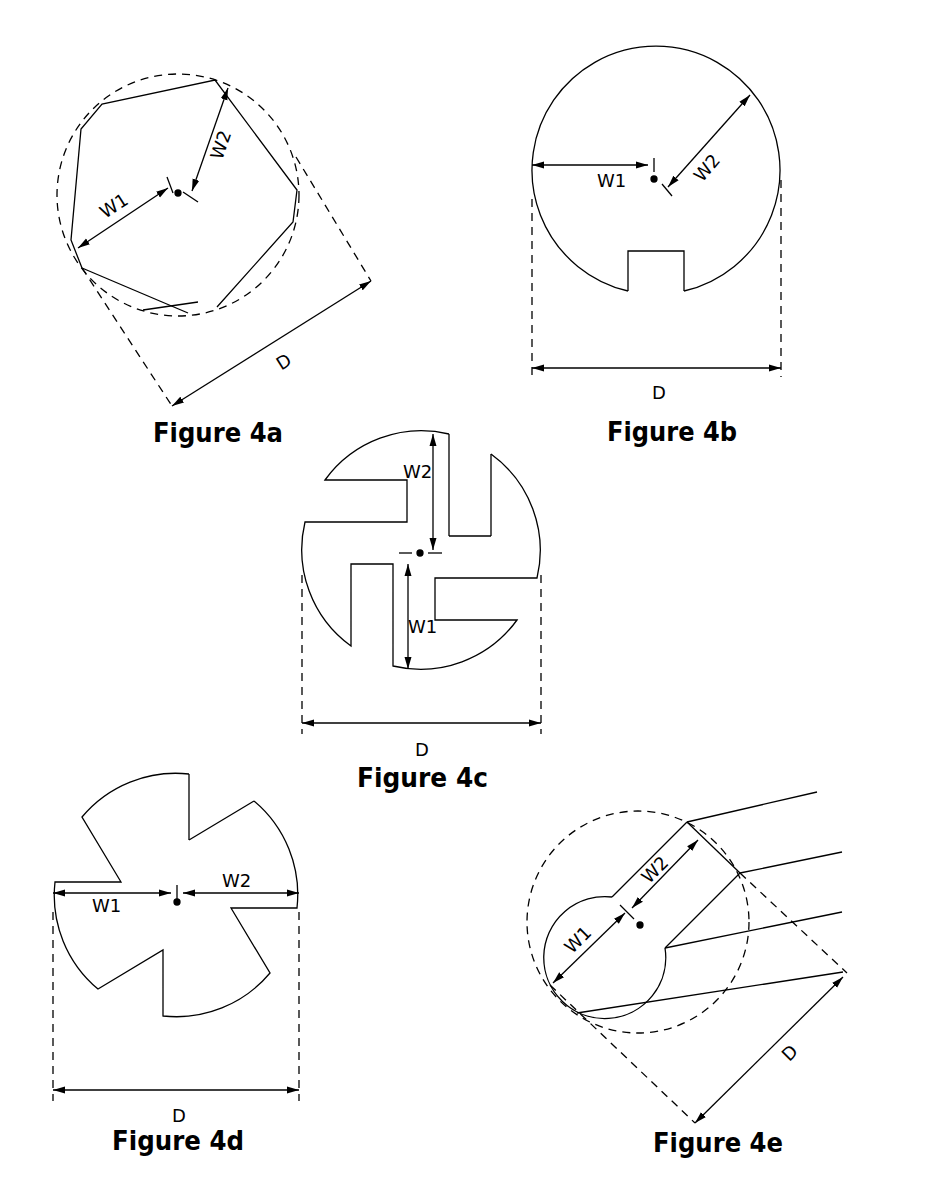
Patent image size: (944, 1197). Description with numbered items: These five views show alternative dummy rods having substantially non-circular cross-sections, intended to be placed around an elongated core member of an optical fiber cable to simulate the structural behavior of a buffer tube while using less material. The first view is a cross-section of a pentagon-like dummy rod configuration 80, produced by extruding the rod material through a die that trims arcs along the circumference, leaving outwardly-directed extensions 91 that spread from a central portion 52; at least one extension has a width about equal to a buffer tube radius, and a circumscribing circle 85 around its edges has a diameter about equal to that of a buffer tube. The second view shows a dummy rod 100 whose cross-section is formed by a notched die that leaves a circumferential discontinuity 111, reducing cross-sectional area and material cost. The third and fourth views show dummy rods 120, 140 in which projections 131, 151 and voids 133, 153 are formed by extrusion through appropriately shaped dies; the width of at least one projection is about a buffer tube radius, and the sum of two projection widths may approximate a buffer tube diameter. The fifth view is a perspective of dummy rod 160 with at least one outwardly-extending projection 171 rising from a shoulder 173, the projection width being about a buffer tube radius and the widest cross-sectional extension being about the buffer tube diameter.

In FIG. 4A, the pentagon-like dummy rod configuration 80 is at (174, 192).
In FIG. 4A, the circumscribed circle 85 is at (143, 75).
In FIG. 4A, the outwardly-directed extensions 91 is at (143, 310).
In FIG. 4A, the central portion 52 is at (178, 196).
In FIG. 4B, the central portion 52 is at (654, 182).
In FIG. 4C, the central portion 52 is at (423, 555).
In FIG. 4D, the central portion 52 is at (177, 905).
In FIG. 4E, the central portion 52 is at (640, 928).
In FIG. 4B, the circular cross-section shaft with keyway 100 is at (689, 157).
In FIG. 4B, the keyway 111 is at (664, 273).
In FIG. 4C, the dummy rod 120 is at (432, 520).
In FIG. 4C, the projections 131 is at (492, 455).
In FIG. 4C, the voids 133 is at (465, 512).
In FIG. 4D, the dummy rod 140 is at (194, 866).
In FIG. 4D, the projections 151 is at (152, 787).
In FIG. 4D, the voids 153 is at (205, 822).
In FIG. 4E, the dummy rod 160 is at (684, 902).
In FIG. 4E, the outwardly-extending projection 171 is at (698, 870).
In FIG. 4E, the shoulder 173 is at (608, 883).